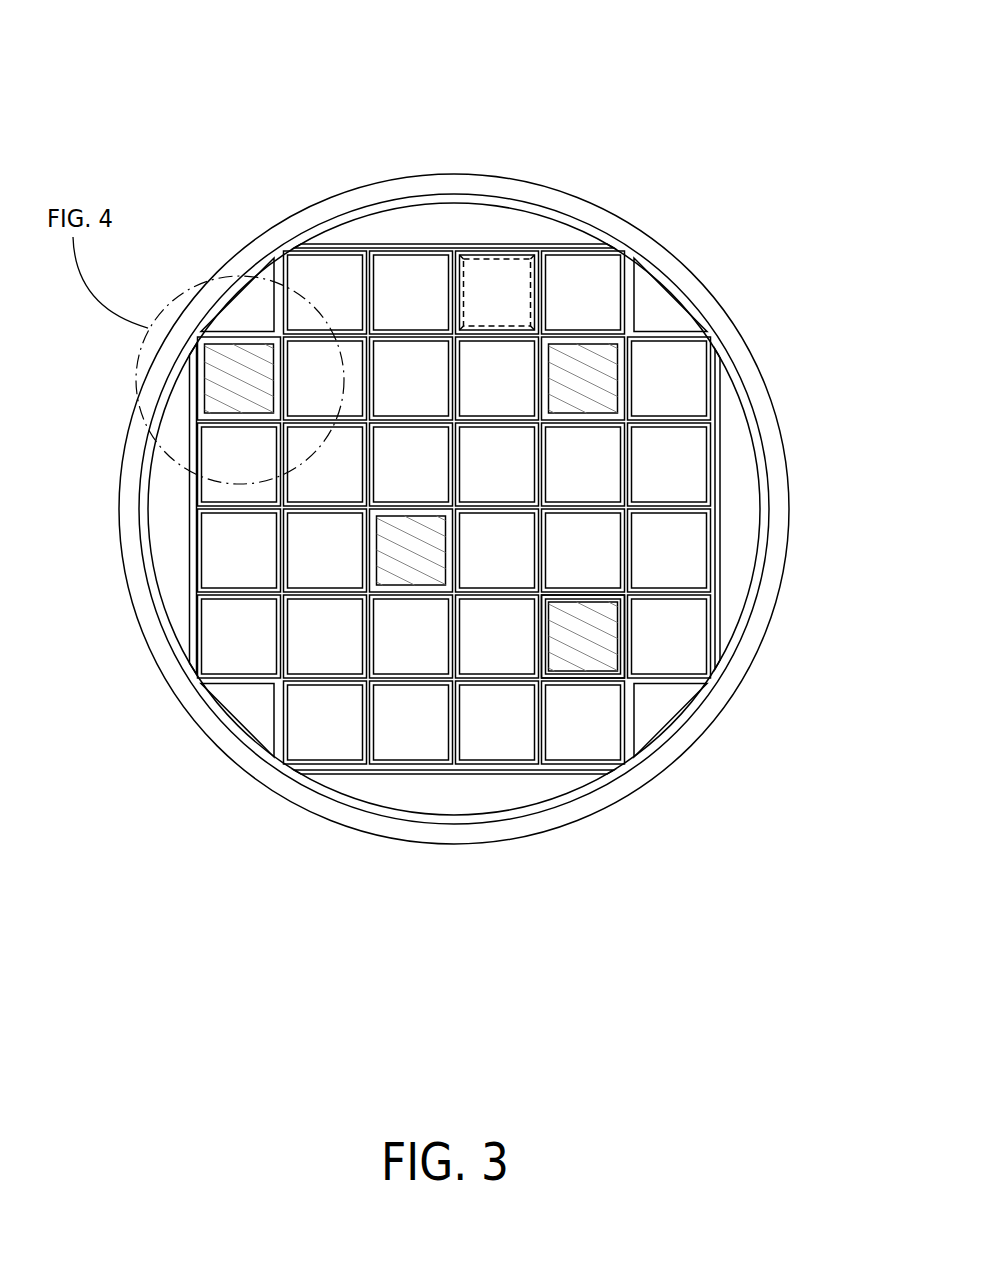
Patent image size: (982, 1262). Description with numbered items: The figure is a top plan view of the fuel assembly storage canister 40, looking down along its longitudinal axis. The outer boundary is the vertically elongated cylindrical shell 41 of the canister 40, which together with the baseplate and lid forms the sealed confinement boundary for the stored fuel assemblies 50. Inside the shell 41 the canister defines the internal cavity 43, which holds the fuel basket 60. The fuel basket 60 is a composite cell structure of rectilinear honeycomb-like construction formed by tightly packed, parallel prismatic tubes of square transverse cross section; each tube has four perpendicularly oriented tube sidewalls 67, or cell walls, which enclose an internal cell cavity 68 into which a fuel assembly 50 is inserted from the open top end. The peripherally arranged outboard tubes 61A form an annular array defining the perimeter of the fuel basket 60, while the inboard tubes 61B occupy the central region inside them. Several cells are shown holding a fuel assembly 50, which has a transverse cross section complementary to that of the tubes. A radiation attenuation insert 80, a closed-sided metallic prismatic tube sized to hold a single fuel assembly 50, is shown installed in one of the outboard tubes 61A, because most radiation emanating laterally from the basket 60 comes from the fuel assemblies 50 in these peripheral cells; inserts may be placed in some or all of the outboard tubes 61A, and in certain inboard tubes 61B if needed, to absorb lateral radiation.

The fuel assembly storage canister 40 is at (209, 214).
The cylindrical shell 41 is at (447, 173).
The internal cavity 43 is at (470, 815).
The fuel assembly 50 is at (237, 380).
The fuel basket 60 is at (387, 234).
The outboard tubes 61A is at (670, 380).
The inboard tubes 61B is at (598, 529).
The tube sidewalls 67 is at (621, 470).
The internal cell cavity 68 is at (327, 713).
The radiation attenuation insert 80 is at (503, 262).